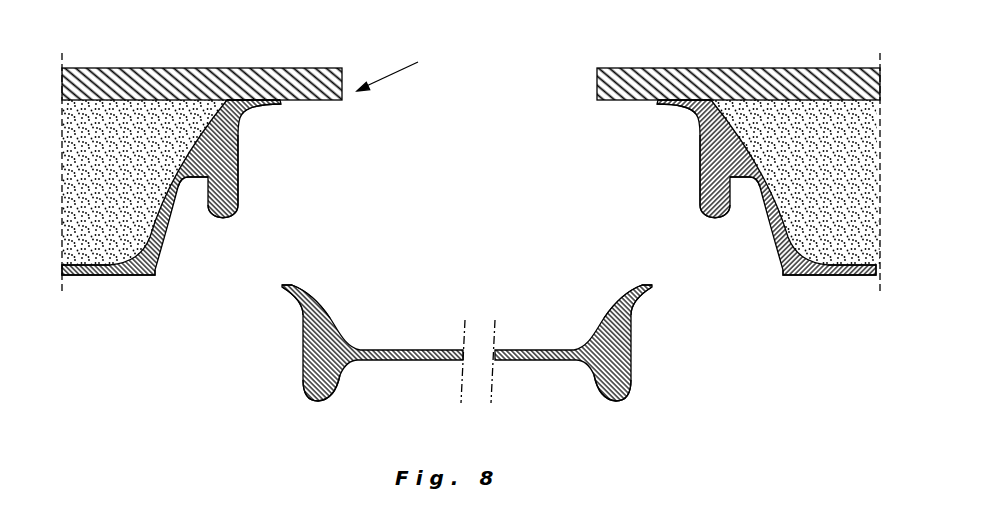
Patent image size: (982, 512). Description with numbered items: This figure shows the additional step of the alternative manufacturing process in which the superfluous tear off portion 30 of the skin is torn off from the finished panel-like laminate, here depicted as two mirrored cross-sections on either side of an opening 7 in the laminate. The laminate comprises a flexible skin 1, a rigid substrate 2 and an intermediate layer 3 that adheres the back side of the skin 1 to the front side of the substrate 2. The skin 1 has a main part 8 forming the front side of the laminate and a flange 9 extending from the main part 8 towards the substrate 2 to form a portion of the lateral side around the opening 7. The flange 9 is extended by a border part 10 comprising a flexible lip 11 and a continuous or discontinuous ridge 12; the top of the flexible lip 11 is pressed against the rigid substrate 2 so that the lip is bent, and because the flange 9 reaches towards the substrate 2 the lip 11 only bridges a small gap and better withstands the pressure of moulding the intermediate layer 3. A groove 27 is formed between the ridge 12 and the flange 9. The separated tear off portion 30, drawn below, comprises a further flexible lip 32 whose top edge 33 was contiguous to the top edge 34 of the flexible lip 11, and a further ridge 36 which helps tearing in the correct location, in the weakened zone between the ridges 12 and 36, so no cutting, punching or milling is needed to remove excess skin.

The flexible skin 1 is at (62, 264).
The rigid substrate 2 is at (100, 83).
The intermediate layer 3 is at (100, 166).
The opening 7 is at (400, 70).
The main part 8 is at (118, 276).
The flange 9 is at (158, 248).
The border part 10 is at (222, 150).
The flexible lip 11 is at (263, 107).
The ridge 12 is at (225, 190).
The groove 27 is at (192, 192).
The tear off portion 30 is at (407, 350).
The further flexible lip 32 is at (290, 285).
The top edge 33 is at (282, 288).
The top edge 34 is at (282, 101).
The further ridge 36 is at (312, 393).